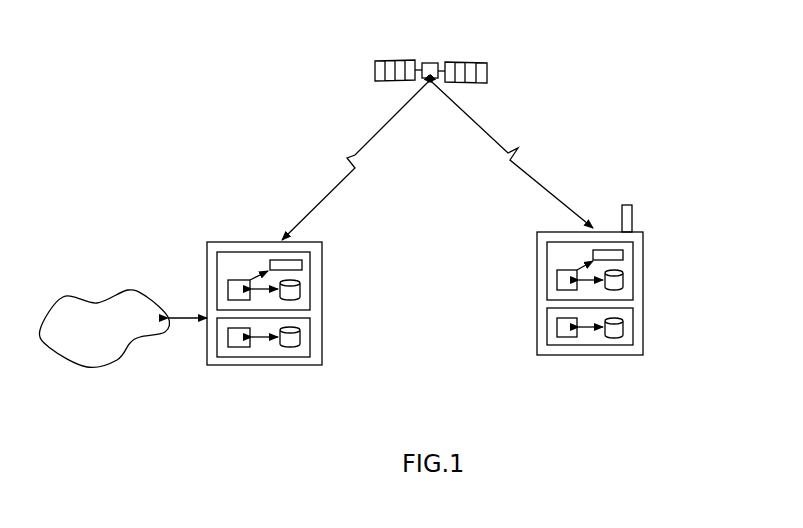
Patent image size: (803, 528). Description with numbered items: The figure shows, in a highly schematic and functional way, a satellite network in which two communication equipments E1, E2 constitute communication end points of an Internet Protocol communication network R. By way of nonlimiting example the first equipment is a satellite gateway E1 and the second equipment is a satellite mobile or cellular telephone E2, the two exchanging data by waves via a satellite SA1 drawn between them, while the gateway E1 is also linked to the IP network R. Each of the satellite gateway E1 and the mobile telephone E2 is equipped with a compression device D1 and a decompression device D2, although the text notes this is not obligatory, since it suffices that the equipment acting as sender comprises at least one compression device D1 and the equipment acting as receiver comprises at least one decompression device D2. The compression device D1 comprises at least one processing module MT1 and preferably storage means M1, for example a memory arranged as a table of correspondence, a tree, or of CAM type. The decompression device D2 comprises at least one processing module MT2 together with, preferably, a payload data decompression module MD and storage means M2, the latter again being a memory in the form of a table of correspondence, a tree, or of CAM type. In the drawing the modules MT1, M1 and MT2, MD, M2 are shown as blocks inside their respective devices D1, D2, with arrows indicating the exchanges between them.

The satellite SA1 is at (437, 62).
The Internet Protocol communication network R is at (104, 340).
The satellite gateway E1 is at (250, 242).
The satellite mobile telephone E2 is at (537, 298).
The compression device D1 is at (316, 360).
The decompression device D2 is at (310, 282).
The payload data decompression module MD is at (302, 265).
The processing module MT2 is at (228, 287).
The processing module MT1 is at (233, 347).
The storage means M2 is at (302, 302).
The storage means M1 is at (287, 347).